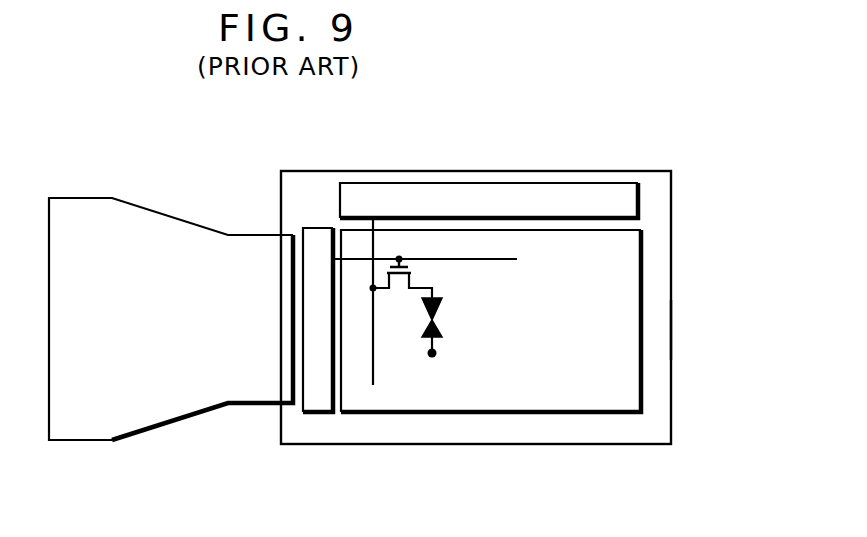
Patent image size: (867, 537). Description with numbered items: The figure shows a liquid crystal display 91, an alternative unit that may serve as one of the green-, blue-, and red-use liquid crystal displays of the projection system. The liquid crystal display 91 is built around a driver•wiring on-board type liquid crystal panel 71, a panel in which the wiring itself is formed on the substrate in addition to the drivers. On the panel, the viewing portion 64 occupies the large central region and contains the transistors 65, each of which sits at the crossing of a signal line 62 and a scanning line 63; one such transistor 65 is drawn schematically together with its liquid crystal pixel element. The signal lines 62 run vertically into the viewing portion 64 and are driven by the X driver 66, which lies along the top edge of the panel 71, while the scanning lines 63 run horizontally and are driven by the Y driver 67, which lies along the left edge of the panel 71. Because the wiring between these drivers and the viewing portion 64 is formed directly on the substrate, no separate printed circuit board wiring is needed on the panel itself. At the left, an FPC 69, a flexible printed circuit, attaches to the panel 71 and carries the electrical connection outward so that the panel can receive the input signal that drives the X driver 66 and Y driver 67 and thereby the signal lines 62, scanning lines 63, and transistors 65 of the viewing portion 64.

The liquid crystal display 91 is at (662, 163).
The FPC (flexible printed circuit) 69 is at (181, 230).
The Y driver 67 is at (318, 400).
The X driver 66 is at (437, 207).
The viewing portion 64 is at (643, 413).
The driver•wiring on-board type liquid crystal panel 71 is at (650, 333).
The signal lines 62 is at (373, 372).
The scanning lines 63 is at (517, 259).
The transistors 65 is at (410, 279).